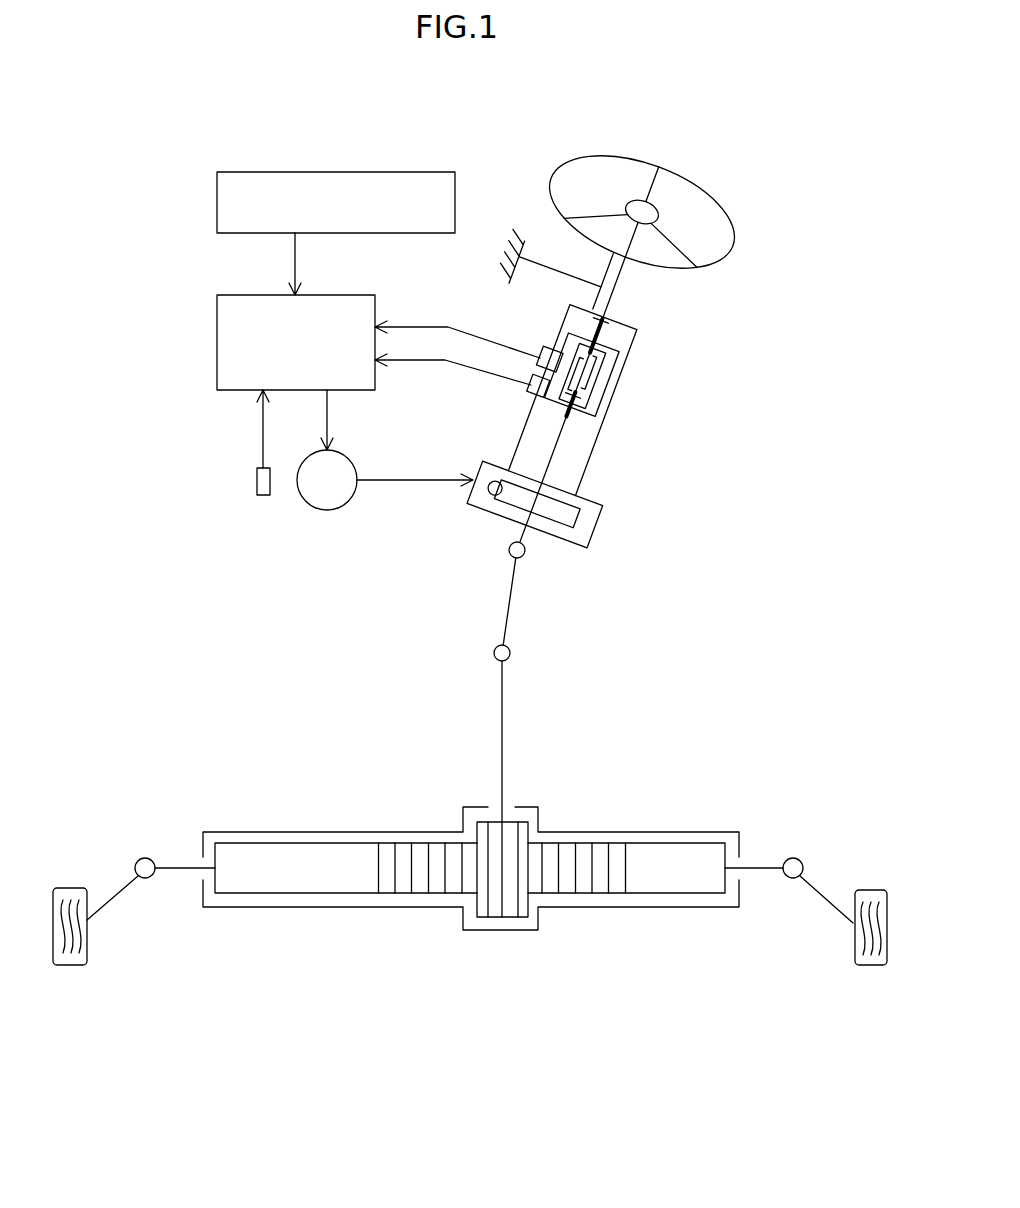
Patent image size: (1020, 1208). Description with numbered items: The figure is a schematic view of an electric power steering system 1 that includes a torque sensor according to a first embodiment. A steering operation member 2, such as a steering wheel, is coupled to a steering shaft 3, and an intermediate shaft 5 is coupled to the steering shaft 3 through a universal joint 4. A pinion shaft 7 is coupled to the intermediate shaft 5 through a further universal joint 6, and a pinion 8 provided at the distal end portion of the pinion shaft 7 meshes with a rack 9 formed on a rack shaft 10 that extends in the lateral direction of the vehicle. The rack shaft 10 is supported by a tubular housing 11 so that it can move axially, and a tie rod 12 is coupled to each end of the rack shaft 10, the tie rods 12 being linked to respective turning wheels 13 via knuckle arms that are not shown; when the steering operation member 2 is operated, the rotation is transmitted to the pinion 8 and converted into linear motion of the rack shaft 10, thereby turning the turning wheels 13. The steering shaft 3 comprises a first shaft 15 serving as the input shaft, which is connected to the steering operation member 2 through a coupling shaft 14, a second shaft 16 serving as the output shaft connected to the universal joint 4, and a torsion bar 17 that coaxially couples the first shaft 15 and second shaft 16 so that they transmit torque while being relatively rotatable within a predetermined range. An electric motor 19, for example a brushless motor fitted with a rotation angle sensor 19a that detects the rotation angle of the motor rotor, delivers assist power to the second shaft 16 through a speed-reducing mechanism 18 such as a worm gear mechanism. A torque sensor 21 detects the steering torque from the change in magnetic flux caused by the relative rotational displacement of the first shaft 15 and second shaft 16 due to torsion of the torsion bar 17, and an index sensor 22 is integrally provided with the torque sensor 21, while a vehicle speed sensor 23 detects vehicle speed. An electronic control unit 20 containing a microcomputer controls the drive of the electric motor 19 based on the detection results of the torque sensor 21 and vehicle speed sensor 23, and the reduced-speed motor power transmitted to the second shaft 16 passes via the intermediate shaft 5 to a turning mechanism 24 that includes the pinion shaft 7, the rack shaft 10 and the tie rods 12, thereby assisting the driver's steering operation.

The electric power steering system 1 is at (761, 145).
The steering operation member 2 is at (632, 158).
The steering shaft 3 is at (631, 285).
The universal joint 4 is at (525, 550).
The intermediate shaft 5 is at (512, 602).
The universal joint 6 is at (510, 653).
The pinion shaft 7 is at (515, 773).
The pinion 8 is at (515, 907).
The rack 9 is at (435, 885).
The rack shaft 10 is at (582, 893).
The tubular housing 11 is at (365, 832).
The tie rod 12 is at (108, 900).
The turning wheel 13 is at (72, 965).
The coupling shaft 14 is at (612, 303).
The first shaft 15 is at (607, 338).
The second shaft 16 is at (553, 452).
The torsion bar 17 is at (580, 393).
The speed-reducing mechanism 18 is at (608, 528).
The electric motor 19 is at (317, 511).
The rotation angle sensor 19a is at (257, 481).
The electronic control unit (ECU) 20 is at (217, 339).
The torque sensor 21 is at (543, 347).
The index sensor 22 is at (533, 390).
The vehicle speed sensor 23 is at (217, 201).
The turning mechanism 24 is at (711, 809).